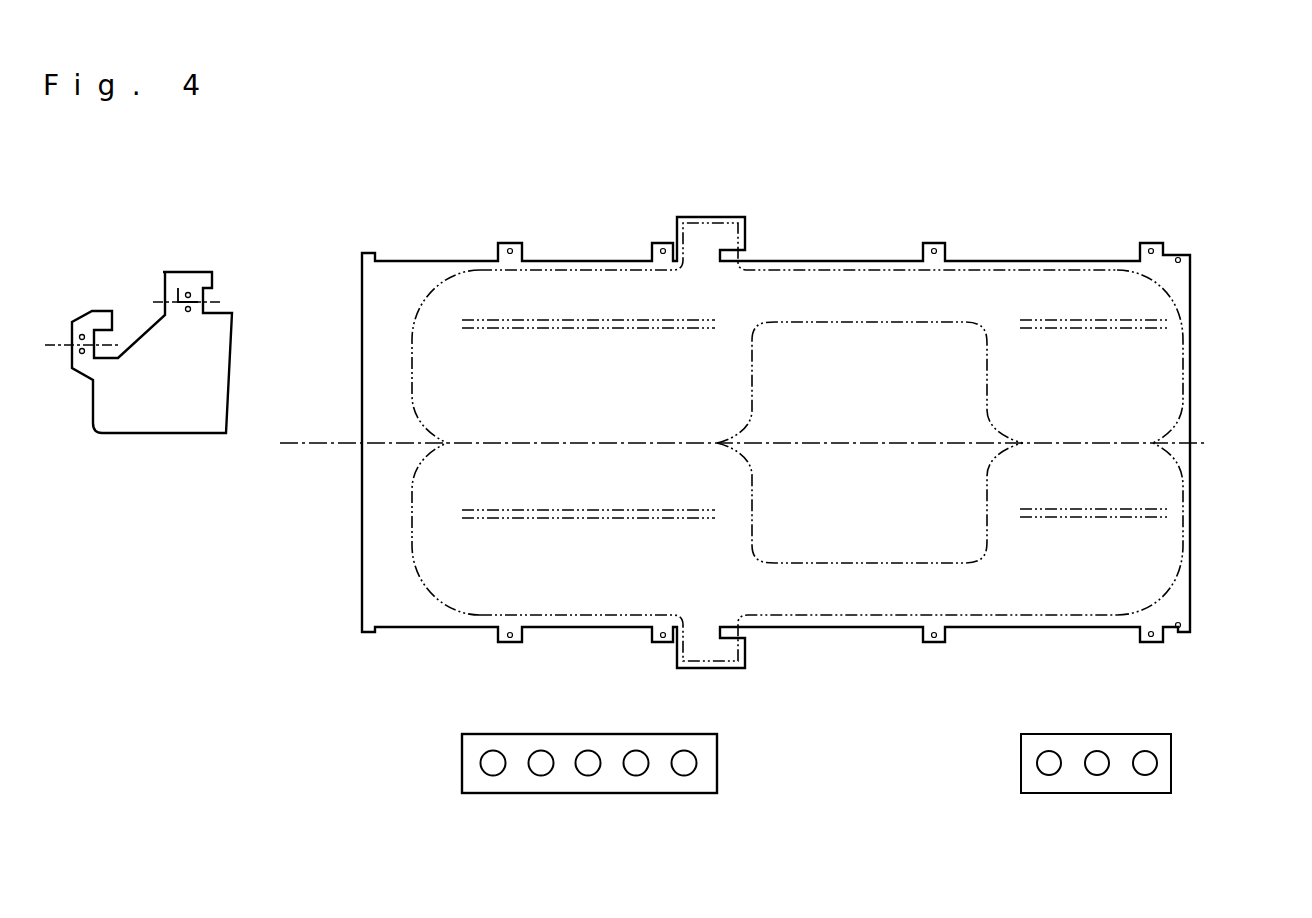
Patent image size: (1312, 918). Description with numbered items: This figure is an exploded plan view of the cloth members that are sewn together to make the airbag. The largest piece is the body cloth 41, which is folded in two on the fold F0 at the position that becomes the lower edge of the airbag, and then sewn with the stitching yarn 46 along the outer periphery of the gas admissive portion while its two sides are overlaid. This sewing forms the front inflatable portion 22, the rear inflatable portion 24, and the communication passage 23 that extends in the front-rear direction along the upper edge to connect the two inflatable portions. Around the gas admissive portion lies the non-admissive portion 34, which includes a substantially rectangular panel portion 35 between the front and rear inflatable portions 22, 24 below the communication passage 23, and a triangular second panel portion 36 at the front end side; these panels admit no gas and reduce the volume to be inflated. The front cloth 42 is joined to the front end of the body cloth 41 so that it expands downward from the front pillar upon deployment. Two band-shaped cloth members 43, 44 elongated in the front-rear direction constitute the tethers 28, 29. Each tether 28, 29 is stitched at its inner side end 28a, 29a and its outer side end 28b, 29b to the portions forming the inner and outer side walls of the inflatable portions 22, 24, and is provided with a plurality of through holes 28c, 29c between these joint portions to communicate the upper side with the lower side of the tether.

The body cloth 41 is at (353, 203).
The stitching yarn 46 is at (430, 300).
The front inflatable portion 22 is at (560, 285).
The communication passage 23 is at (860, 290).
The rear inflatable portion 24 is at (1170, 355).
The non-admissive portion 34 is at (820, 263).
The panel portion 35 is at (960, 345).
The tether 28 is at (526, 820).
The inner side end of tether 28a is at (478, 522).
The outer side end of tether 28b is at (600, 312).
The through holes 28c is at (588, 765).
The tether 29 is at (1030, 825).
The inner side end of tether 29a is at (1150, 528).
The outer side end of tether 29b is at (1090, 298).
The through holes 29c is at (1100, 821).
The front cloth 42 is at (138, 459).
The second panel portion 36 is at (160, 466).
The band-shaped cloth member 43 is at (526, 820).
The band-shaped cloth member 44 is at (1030, 825).
The fold F0 is at (318, 447).